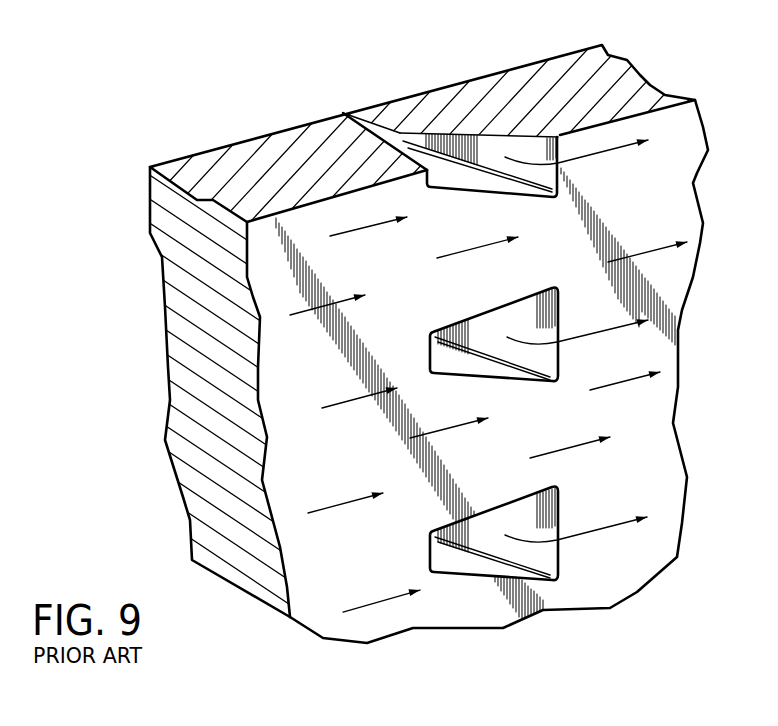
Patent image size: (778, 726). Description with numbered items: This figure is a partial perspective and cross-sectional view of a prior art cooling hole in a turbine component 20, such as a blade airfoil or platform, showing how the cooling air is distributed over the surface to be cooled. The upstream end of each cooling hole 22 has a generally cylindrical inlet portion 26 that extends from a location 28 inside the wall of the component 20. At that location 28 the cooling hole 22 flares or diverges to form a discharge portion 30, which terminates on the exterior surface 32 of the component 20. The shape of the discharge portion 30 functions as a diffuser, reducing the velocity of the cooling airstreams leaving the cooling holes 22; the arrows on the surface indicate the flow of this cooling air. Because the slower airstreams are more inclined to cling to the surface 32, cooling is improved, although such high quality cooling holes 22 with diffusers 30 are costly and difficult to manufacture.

The component 20 is at (202, 148).
The cooling hole 22 is at (340, 122).
The inlet portion 26 is at (363, 127).
The location 28 is at (397, 140).
The discharge portion 30 is at (488, 147).
The exterior surface 32 is at (665, 227).